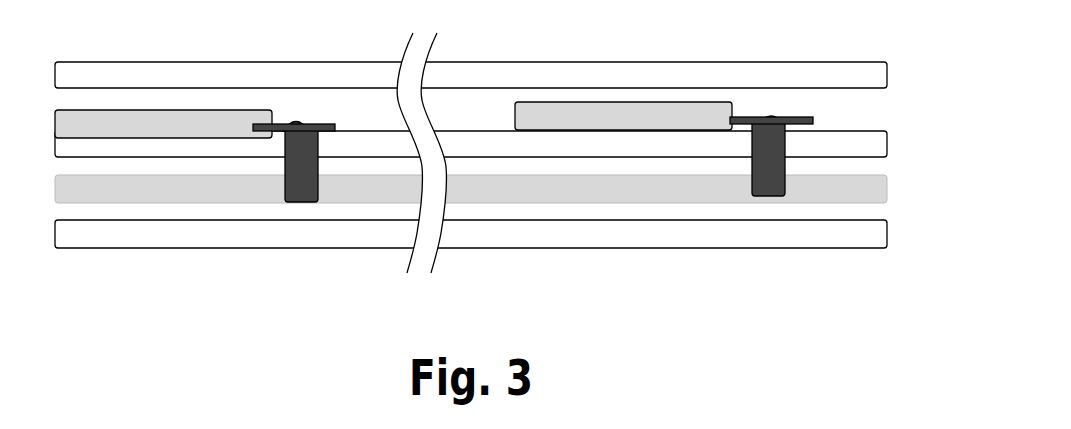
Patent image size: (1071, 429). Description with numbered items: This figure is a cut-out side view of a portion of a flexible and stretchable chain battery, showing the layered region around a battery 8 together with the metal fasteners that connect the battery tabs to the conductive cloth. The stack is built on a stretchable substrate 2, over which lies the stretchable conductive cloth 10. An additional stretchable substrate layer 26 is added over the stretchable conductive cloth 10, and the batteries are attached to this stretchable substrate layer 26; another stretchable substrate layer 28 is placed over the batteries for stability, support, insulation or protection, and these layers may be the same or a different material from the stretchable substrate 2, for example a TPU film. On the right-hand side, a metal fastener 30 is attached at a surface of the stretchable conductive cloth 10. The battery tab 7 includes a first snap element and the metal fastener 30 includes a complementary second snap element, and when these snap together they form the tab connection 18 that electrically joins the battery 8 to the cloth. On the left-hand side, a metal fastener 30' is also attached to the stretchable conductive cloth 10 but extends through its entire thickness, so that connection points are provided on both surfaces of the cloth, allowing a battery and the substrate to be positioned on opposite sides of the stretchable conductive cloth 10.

The stretchable substrate 2 is at (883, 232).
The battery tab 7 is at (745, 115).
The battery 8 is at (65, 115).
The stretchable conductive cloth 10 is at (883, 185).
The tab connection 18 is at (534, 107).
The stretchable substrate layer 26 is at (883, 140).
The stretchable substrate layer 28 is at (883, 72).
The metal fastener 30 is at (797, 146).
The metal fastener 30' is at (328, 149).